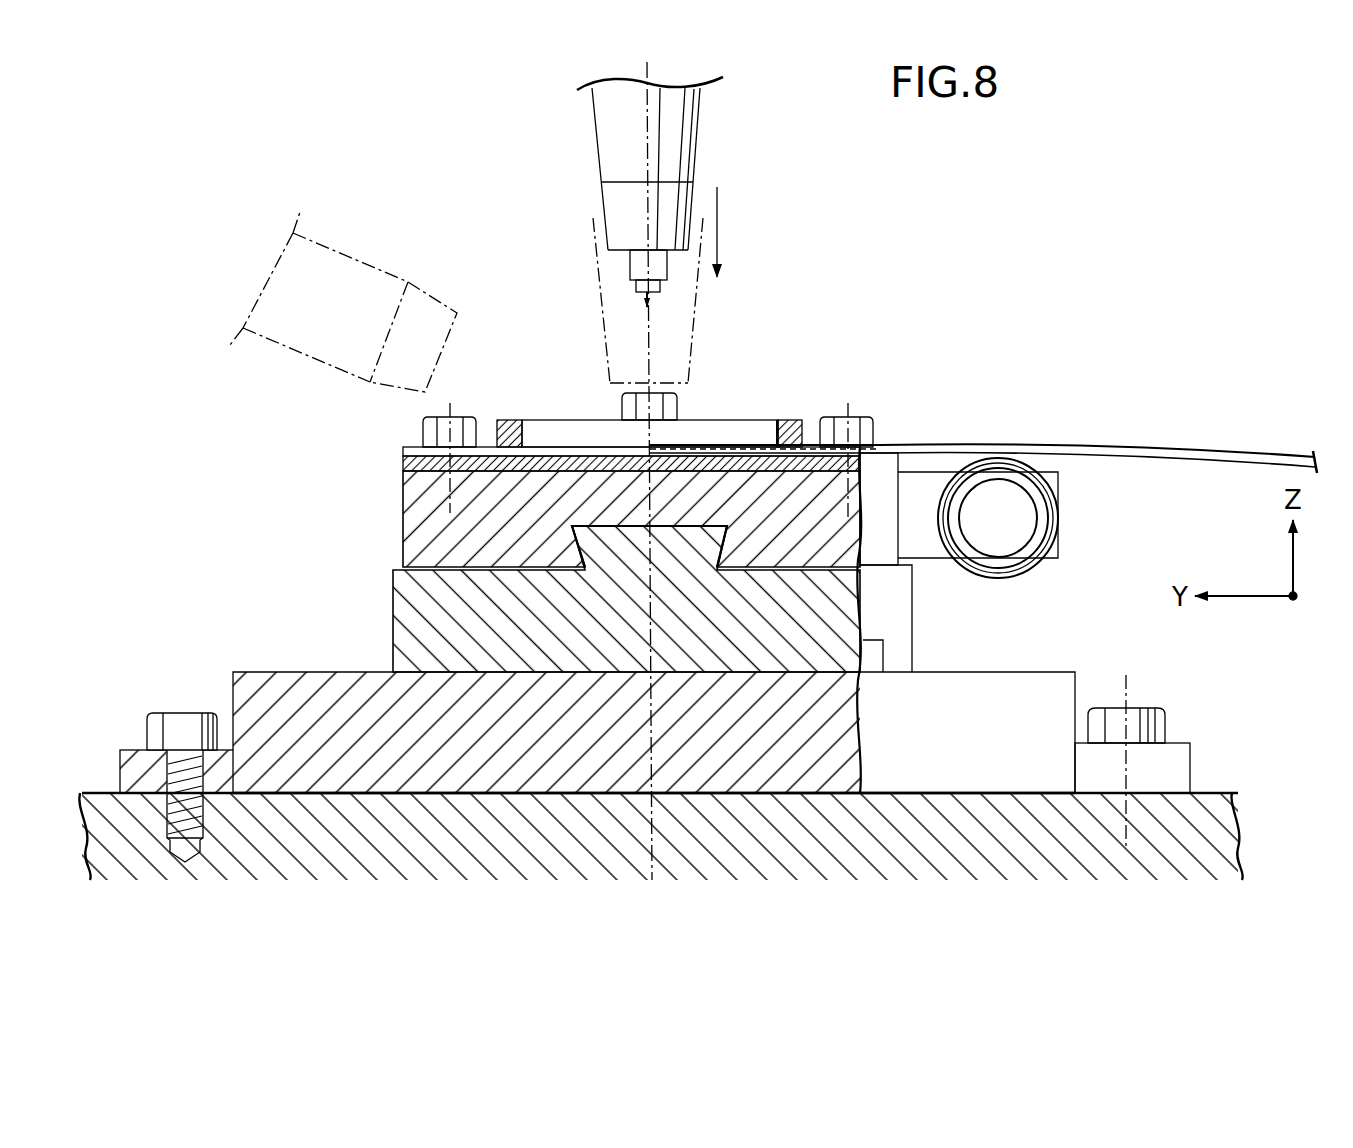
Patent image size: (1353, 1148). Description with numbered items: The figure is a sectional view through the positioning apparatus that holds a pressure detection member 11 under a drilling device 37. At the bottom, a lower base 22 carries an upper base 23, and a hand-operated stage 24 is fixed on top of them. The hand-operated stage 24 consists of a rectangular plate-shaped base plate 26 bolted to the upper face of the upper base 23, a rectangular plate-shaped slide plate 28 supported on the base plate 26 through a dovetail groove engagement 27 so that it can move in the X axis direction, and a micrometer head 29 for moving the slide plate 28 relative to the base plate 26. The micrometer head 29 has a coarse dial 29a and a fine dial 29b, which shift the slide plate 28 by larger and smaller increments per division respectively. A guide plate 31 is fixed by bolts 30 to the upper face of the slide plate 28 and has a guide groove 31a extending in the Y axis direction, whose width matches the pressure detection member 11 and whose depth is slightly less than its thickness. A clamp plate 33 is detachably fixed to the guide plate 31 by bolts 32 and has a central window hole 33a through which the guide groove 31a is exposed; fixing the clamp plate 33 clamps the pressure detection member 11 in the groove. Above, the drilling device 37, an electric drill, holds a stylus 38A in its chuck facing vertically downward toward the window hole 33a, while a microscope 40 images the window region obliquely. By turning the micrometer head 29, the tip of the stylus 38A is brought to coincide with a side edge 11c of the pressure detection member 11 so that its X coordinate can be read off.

The pressure detection member 11 is at (1134, 443).
The side edge 11c is at (1212, 450).
The lower base 22 is at (1212, 803).
The upper base 23 is at (1060, 688).
The hand-operated stage 24 is at (560, 571).
The base plate 26 is at (400, 640).
The dovetail groove engagement 27 is at (712, 547).
The slide plate 28 is at (400, 540).
The micrometer head 29 is at (1062, 514).
The coarse dial 29a is at (1010, 577).
The fine dial 29b is at (960, 545).
The bolts 30 is at (456, 416).
The guide plate 31 is at (398, 455).
The guide groove 31a is at (563, 452).
The bolts 32 is at (677, 405).
The clamp plate 33 is at (797, 412).
The window hole 33a is at (777, 420).
The drilling device 37 is at (692, 127).
The stylus 38A is at (653, 301).
The microscope 40 is at (345, 255).